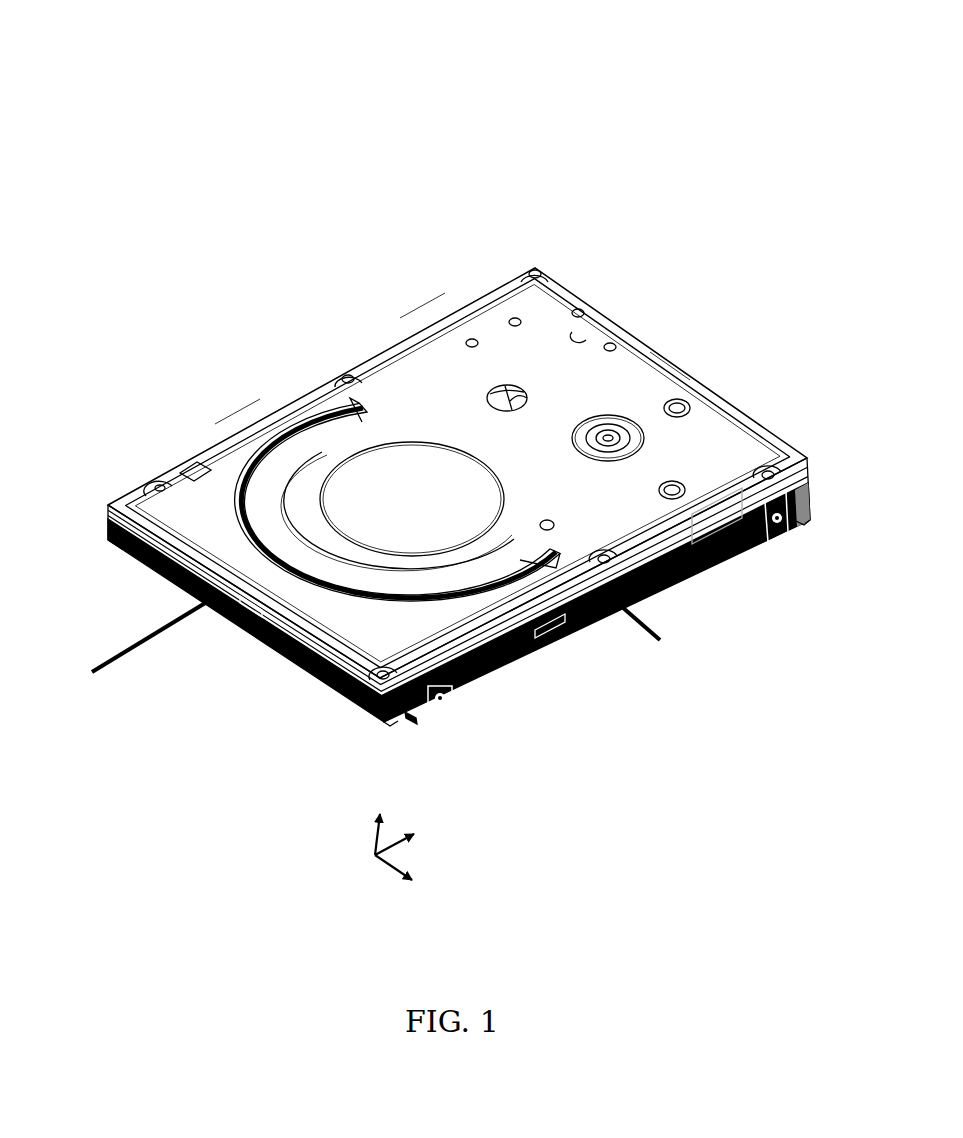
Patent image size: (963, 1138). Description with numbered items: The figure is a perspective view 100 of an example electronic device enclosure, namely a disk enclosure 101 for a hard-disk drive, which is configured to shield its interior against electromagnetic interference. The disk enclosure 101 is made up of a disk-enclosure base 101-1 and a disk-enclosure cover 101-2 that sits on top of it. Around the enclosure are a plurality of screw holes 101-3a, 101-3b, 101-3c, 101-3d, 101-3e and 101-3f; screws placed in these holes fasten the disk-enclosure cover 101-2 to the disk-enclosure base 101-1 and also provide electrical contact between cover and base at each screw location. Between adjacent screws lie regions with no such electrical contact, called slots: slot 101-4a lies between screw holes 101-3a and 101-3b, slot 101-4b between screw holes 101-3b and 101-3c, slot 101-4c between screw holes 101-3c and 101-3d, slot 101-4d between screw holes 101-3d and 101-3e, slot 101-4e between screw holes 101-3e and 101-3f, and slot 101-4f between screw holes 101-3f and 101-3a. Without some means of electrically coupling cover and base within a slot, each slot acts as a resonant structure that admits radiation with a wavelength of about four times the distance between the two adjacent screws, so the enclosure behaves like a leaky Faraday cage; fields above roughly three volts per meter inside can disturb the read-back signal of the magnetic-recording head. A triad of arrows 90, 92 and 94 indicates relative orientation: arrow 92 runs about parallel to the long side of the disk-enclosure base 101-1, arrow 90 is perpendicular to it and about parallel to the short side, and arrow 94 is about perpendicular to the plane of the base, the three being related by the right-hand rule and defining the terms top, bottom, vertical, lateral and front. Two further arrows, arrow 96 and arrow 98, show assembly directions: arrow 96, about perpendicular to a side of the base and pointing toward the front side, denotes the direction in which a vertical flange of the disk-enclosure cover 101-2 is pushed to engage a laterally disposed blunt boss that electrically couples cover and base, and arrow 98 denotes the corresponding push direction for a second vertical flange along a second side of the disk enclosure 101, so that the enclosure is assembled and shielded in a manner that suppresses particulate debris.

The perspective view 100 is at (100, 84).
The disk enclosure 101 is at (570, 234).
The disk-enclosure base 101-1 is at (478, 676).
The disk-enclosure cover 101-2 is at (586, 330).
The screw hole 101-3a is at (158, 486).
The screw hole 101-3b is at (385, 672).
The screw hole 101-3c is at (604, 556).
The screw hole 101-3d is at (771, 471).
The screw hole 101-3e is at (533, 270).
The screw hole 101-3f is at (346, 376).
The slot 101-4a is at (256, 616).
The slot 101-4b is at (524, 636).
The slot 101-4c is at (701, 541).
The slot 101-4d is at (676, 355).
The slot 101-4e is at (417, 310).
The slot 101-4f is at (232, 410).
The arrow 90 is at (396, 868).
The arrow 92 is at (398, 826).
The arrow 94 is at (372, 841).
The arrow 96 is at (166, 620).
The arrow 98 is at (690, 674).